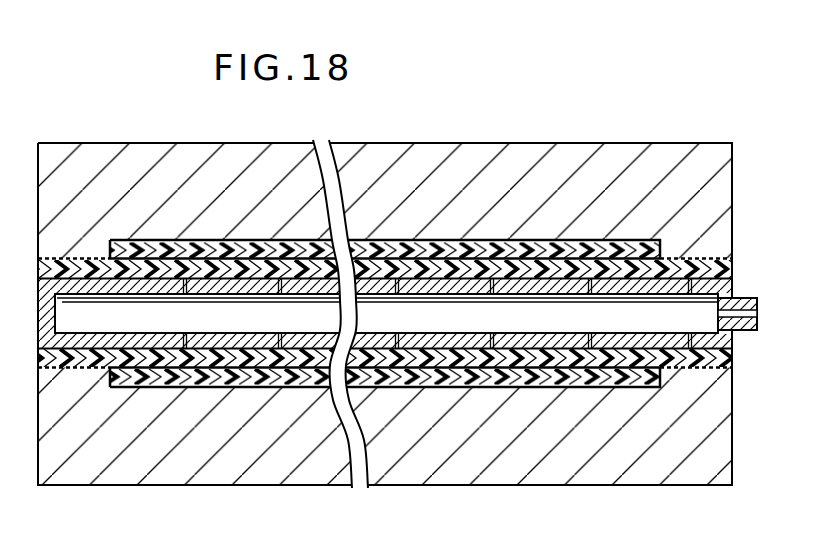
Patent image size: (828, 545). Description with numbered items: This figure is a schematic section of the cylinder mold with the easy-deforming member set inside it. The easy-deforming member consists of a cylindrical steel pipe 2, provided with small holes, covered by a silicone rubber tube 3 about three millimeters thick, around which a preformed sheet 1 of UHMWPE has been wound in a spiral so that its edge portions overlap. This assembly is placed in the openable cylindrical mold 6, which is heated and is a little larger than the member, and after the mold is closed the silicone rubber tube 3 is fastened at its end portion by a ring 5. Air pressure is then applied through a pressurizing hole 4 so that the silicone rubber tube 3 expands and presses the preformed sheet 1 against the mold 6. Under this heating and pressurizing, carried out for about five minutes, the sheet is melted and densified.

The preformed sheet 1 is at (552, 257).
The cylindrical steel pipe 2 is at (617, 342).
The silicone rubber tube 3 is at (503, 358).
The pressurizing hole 4 is at (748, 313).
The ring 5 is at (708, 368).
The cylindrical mold 6 is at (632, 163).